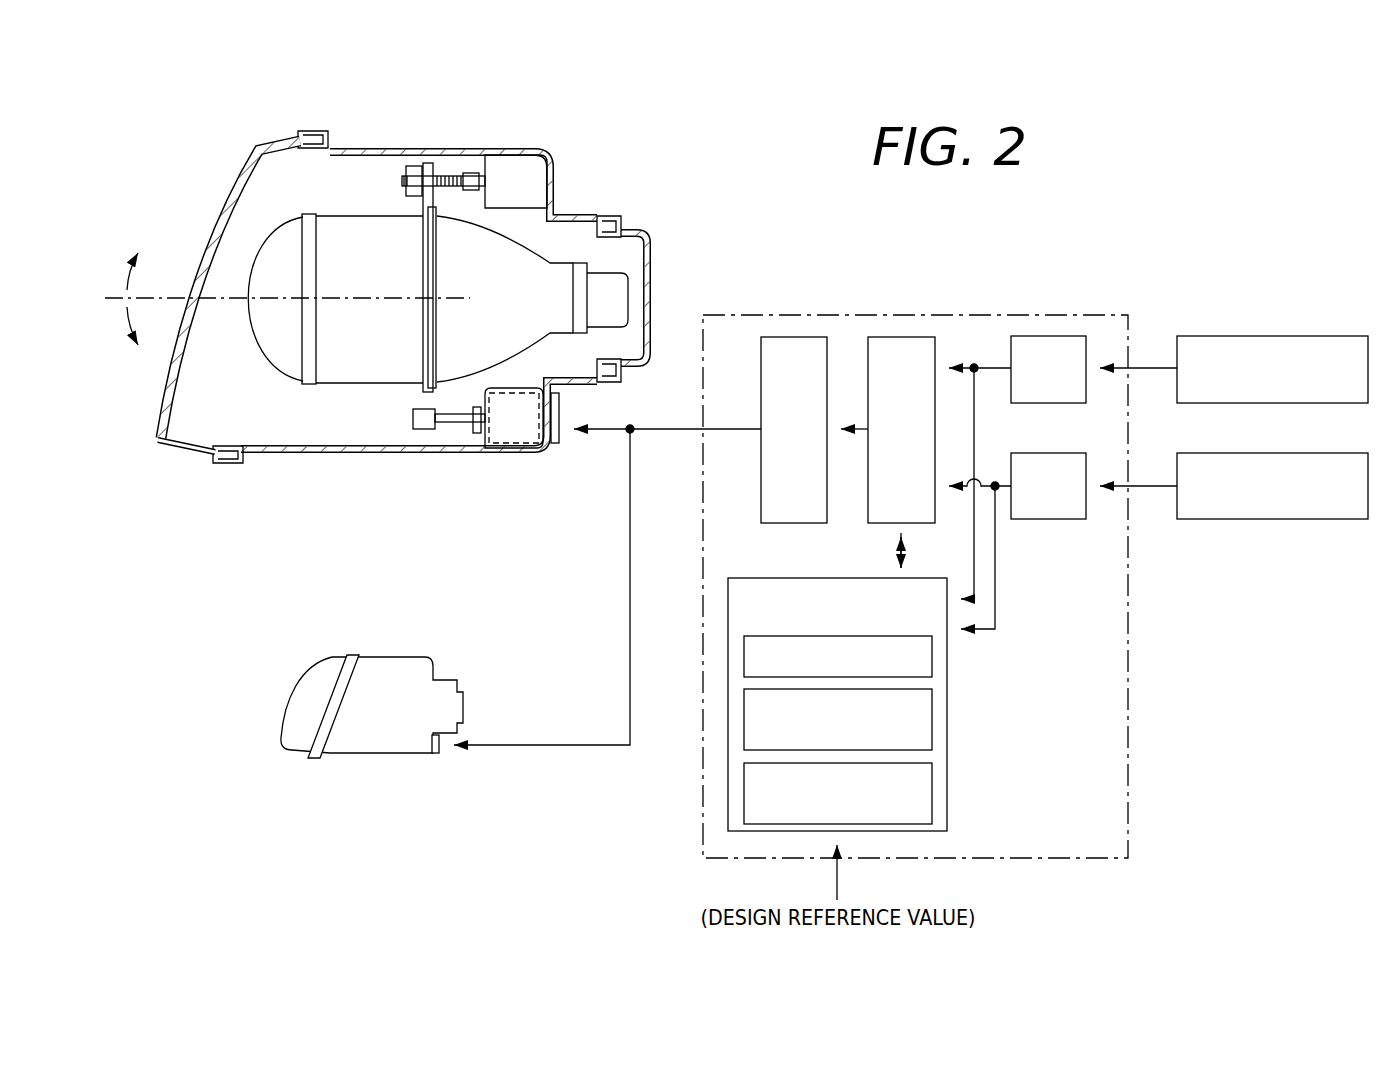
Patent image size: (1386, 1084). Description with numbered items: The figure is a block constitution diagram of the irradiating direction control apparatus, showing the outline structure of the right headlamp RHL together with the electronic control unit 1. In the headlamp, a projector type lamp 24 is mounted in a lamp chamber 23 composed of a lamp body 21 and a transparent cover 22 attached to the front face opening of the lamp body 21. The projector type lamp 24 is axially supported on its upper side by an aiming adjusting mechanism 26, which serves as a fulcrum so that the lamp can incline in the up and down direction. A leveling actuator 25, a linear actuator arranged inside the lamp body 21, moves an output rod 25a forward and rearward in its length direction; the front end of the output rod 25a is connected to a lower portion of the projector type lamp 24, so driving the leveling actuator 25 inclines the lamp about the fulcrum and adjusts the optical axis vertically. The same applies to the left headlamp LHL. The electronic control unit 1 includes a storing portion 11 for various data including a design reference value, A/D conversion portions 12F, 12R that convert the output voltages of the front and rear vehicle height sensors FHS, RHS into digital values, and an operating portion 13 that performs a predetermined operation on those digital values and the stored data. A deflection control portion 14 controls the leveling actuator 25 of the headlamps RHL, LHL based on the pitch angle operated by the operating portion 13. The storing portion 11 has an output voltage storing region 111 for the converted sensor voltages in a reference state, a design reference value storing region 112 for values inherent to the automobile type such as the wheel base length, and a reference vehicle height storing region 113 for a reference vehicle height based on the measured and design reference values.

The electronic control unit 1 is at (1072, 300).
The storing portion 11 is at (947, 810).
The output voltage storing region 111 is at (932, 655).
The design reference value storing region 112 is at (932, 703).
The reference vehicle height storing region 113 is at (932, 768).
The A/D conversion portion 12F is at (1062, 403).
The A/D conversion portion 12R is at (1062, 519).
The operating portion 13 is at (903, 337).
The deflection control portion 14 is at (795, 337).
The lamp body 21 is at (553, 176).
The transparent cover 22 is at (208, 226).
The lamp chamber 23 is at (253, 405).
The projector type lamp 24 is at (312, 395).
The leveling actuator 25 is at (553, 445).
The output rod 25a is at (453, 422).
The aiming adjusting mechanism 26 is at (455, 176).
The right headlamp RHL is at (272, 131).
The left headlamp LHL is at (310, 665).
The front vehicle height sensor FHS is at (1323, 336).
The rear vehicle height sensor RHS is at (1233, 519).